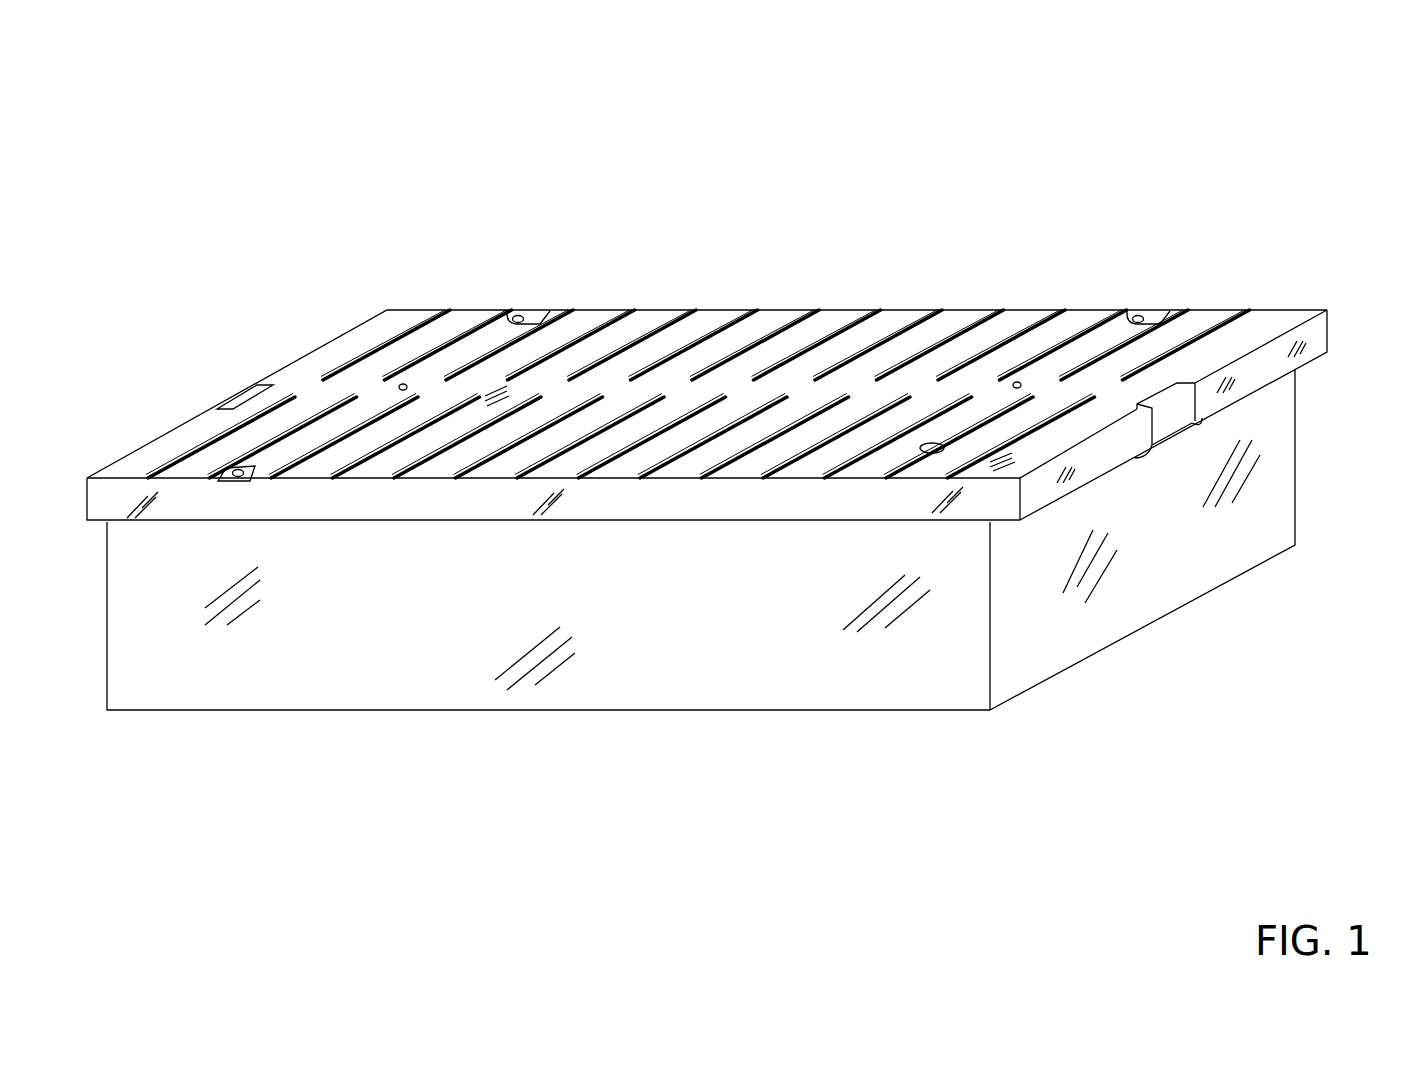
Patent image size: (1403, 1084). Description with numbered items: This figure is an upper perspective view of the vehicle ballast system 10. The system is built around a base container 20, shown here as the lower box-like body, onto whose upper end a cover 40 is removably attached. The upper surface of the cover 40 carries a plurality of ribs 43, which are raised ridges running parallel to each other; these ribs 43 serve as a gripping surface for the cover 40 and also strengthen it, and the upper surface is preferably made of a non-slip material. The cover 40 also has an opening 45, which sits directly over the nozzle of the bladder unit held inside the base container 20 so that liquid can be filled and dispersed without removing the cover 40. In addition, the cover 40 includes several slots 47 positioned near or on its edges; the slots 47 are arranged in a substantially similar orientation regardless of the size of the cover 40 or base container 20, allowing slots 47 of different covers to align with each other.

The vehicle ballast system 10 is at (233, 202).
The base container 20 is at (677, 712).
The cover 40 is at (903, 310).
The ribs 43 is at (968, 318).
The opening 45 is at (935, 455).
The slots 47 is at (1137, 318).